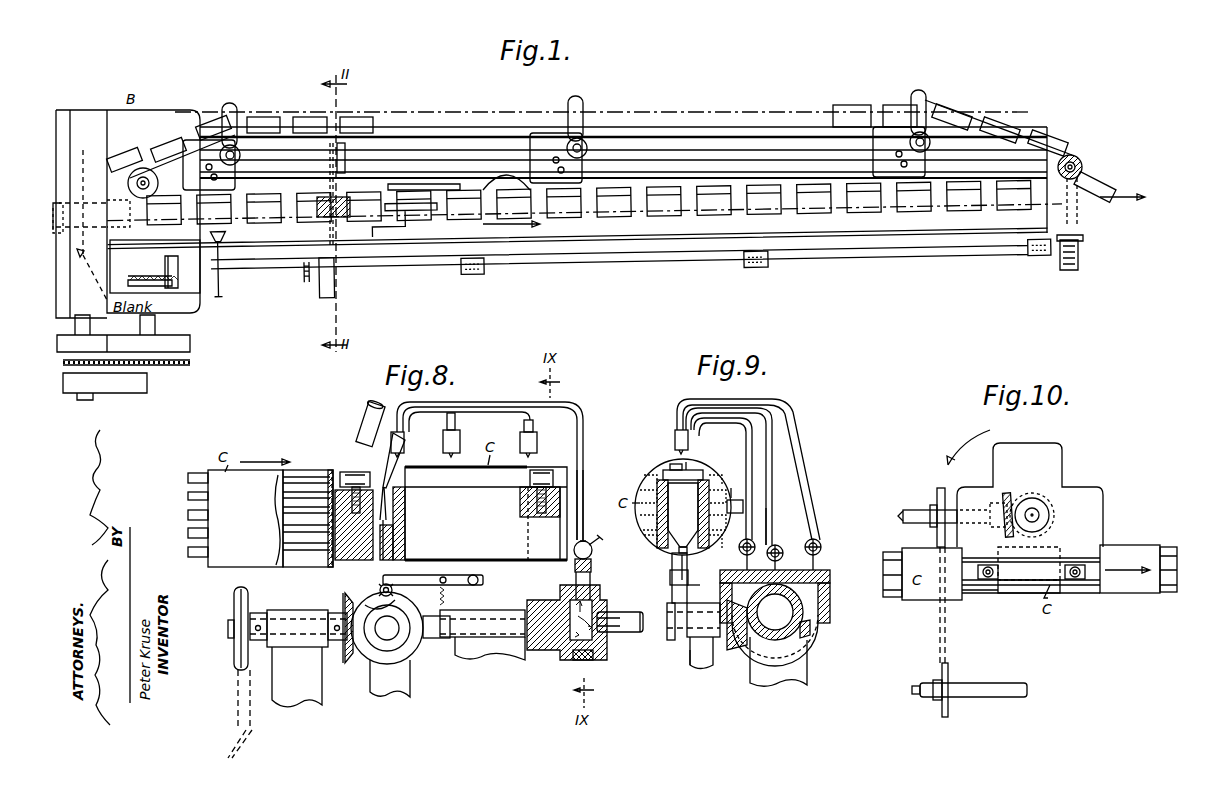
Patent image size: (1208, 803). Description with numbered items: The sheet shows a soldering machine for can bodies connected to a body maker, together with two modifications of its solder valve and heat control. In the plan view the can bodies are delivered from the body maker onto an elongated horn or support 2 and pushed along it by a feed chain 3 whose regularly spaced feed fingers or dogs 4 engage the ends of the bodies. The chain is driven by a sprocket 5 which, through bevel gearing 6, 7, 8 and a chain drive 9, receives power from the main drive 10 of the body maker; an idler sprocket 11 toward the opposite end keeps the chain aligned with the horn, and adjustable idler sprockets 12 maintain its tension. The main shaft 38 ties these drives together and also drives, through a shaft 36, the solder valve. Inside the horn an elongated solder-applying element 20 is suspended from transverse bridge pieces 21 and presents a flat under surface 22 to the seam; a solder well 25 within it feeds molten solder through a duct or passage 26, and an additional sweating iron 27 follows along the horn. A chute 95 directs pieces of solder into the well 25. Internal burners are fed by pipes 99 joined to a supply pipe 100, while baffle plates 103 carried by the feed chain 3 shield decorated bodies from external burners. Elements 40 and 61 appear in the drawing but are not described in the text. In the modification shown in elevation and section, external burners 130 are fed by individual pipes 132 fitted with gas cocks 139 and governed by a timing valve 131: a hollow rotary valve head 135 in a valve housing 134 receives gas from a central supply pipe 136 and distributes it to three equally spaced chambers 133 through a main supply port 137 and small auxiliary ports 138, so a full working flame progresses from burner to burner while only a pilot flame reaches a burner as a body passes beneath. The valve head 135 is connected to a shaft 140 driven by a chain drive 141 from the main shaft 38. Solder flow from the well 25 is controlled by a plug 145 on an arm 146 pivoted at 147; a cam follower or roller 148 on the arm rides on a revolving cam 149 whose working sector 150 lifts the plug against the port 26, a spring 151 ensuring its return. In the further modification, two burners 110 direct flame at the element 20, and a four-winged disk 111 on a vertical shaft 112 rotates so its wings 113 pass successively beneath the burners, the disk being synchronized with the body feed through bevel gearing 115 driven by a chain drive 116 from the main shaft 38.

In FIG. 1, the horn 2 is at (133, 220).
In FIG. 8, the horn 2 is at (190, 498).
In FIG. 9, the horn 2 is at (642, 490).
In FIG. 10, the horn 2 is at (978, 592).
In FIG. 1, the feed chain 3 is at (400, 190).
In FIG. 1, the feed fingers 4 is at (386, 133).
In FIG. 9, the feed fingers 4 is at (735, 493).
In FIG. 1, the driving sprocket 5 is at (1076, 158).
In FIG. 1, the bevel gearing 6 is at (1106, 193).
In FIG. 1, the bevel gearing 7 is at (1072, 252).
In FIG. 1, the bevel gearing 8 is at (162, 275).
In FIG. 1, the chain drive 9 is at (163, 366).
In FIG. 1, the main drive 10 is at (85, 400).
In FIG. 1, the idler sprocket 11 is at (158, 184).
In FIG. 1, the adjustable idler sprockets 12 is at (241, 155).
In FIG. 1, the solder-applying element 20 is at (340, 205).
In FIG. 8, the solder-applying element 20 is at (356, 561).
In FIG. 9, the solder-applying element 20 is at (683, 508).
In FIG. 10, the solder-applying element 20 is at (975, 600).
In FIG. 8, the transverse bridge pieces 21 is at (350, 470).
In FIG. 8, the flat under surface 22 is at (392, 440).
In FIG. 9, the flat under surface 22 is at (690, 468).
In FIG. 8, the solder well 25 is at (406, 500).
In FIG. 8, the duct 26 is at (396, 535).
In FIG. 1, the additional iron 27 is at (427, 213).
In FIG. 8, the shaft 36 is at (232, 630).
In FIG. 1, the main shaft 38 is at (537, 262).
In FIG. 10, the main shaft 38 is at (990, 684).
In FIG. 1, the rod 40 is at (345, 165).
In FIG. 1, the bracket 61 is at (330, 277).
In FIG. 8, the chute 95 is at (358, 423).
In FIG. 1, the pipes 99 is at (75, 200).
In FIG. 1, the supply pipe 100 is at (222, 233).
In FIG. 1, the baffle plates 103 is at (263, 118).
In FIG. 10, the burners 110 is at (986, 565).
In FIG. 10, the four-winged disk 111 is at (1050, 480).
In FIG. 10, the vertical shaft 112 is at (1040, 513).
In FIG. 10, the wings 113 is at (1095, 520).
In FIG. 10, the bevel gearing 115 is at (1013, 492).
In FIG. 10, the chain drive 116 is at (938, 636).
In FIG. 8, the external burners 130 is at (443, 440).
In FIG. 9, the external burners 130 is at (675, 440).
In FIG. 8, the timing valve 131 is at (598, 645).
In FIG. 9, the timing valve 131 is at (815, 630).
In FIG. 8, the burner pipes 132 is at (584, 464).
In FIG. 9, the burner pipes 132 is at (775, 510).
In FIG. 9, the chambers 133 is at (800, 660).
In FIG. 8, the valve housing 134 is at (548, 638).
In FIG. 9, the valve housing 134 is at (820, 566).
In FIG. 8, the rotary valve head 135 is at (588, 660).
In FIG. 9, the rotary valve head 135 is at (775, 612).
In FIG. 8, the central supply pipe 136 is at (622, 612).
In FIG. 8, the main supply port 137 is at (591, 575).
In FIG. 9, the main supply port 137 is at (788, 545).
In FIG. 9, the auxiliary ports 138 is at (738, 650).
In FIG. 8, the gas cocks 139 is at (598, 539).
In FIG. 9, the gas cocks 139 is at (821, 543).
In FIG. 8, the shaft 140 is at (437, 638).
In FIG. 8, the chain drive 141 is at (238, 690).
In FIG. 8, the valve plug 145 is at (396, 550).
In FIG. 9, the valve plug 145 is at (688, 570).
In FIG. 8, the arm 146 is at (432, 573).
In FIG. 9, the arm 146 is at (703, 582).
In FIG. 8, the pivot 147 is at (478, 583).
In FIG. 8, the cam follower 148 is at (380, 580).
In FIG. 9, the cam follower 148 is at (677, 568).
In FIG. 8, the cam 149 is at (352, 655).
In FIG. 9, the cam 149 is at (680, 640).
In FIG. 8, the working sector 150 is at (388, 655).
In FIG. 9, the working sector 150 is at (688, 592).
In FIG. 8, the spring 151 is at (431, 597).